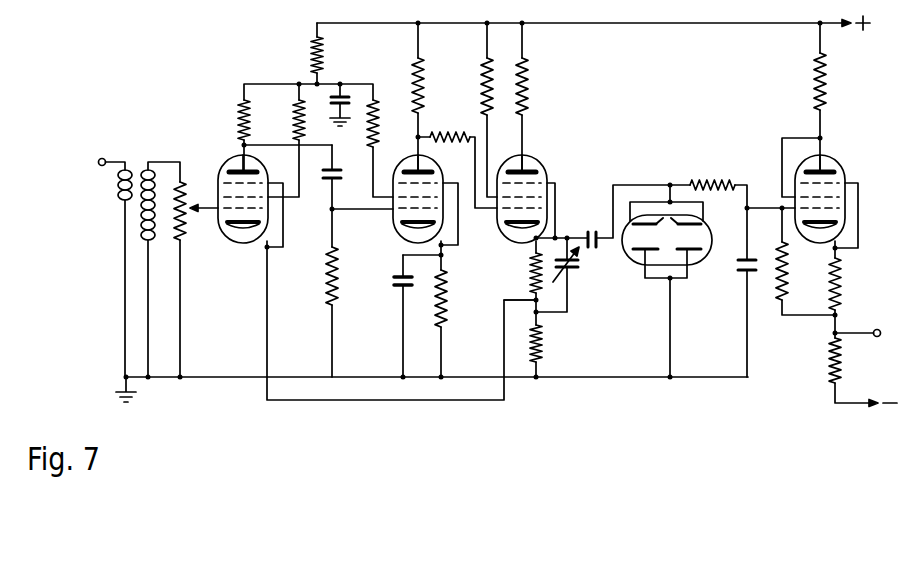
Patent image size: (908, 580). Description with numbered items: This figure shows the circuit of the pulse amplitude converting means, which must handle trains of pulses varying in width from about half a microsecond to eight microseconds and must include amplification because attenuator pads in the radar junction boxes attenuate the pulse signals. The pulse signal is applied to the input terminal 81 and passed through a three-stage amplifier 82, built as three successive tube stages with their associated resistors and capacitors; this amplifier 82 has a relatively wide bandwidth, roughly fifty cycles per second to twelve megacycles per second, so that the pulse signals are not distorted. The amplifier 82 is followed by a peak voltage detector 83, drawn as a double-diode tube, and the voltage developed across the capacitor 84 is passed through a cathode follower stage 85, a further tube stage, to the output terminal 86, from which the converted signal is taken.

The input terminal 81 is at (111, 256).
The three-stage amplifier 82 is at (317, 246).
The peak voltage detector 83 is at (727, 293).
The capacitor 84 is at (756, 273).
The cathode follower stage 85 is at (820, 275).
The output terminal 86 is at (862, 322).